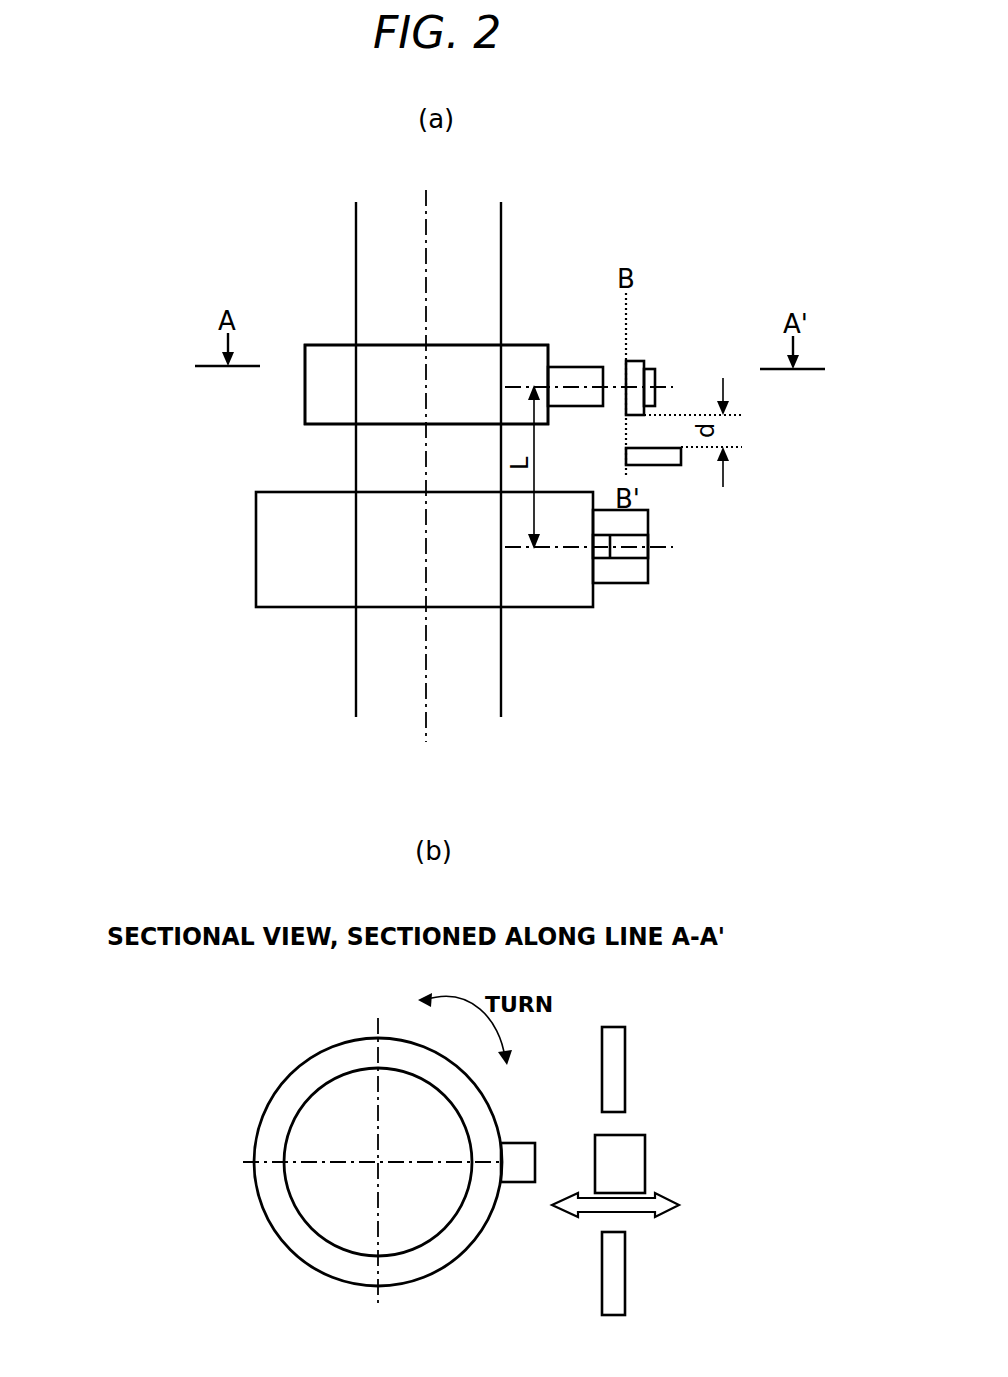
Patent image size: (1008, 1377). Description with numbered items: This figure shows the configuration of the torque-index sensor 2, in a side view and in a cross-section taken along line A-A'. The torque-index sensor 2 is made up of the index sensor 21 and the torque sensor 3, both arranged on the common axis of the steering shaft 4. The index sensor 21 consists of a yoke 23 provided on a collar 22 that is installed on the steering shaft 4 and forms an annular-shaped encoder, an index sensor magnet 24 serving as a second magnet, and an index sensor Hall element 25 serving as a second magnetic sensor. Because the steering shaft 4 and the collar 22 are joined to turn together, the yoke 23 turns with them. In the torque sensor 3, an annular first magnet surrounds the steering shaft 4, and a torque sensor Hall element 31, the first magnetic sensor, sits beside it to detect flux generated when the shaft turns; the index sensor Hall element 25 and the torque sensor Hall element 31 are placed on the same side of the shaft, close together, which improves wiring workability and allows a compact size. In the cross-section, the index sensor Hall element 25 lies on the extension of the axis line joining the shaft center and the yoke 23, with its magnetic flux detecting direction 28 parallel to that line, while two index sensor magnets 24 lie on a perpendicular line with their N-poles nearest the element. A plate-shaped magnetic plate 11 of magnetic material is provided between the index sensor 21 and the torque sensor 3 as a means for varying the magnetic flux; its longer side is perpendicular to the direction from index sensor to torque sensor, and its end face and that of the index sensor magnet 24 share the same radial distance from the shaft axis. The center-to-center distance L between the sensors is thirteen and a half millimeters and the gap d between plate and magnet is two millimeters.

The torque-index sensor 2 is at (175, 238).
The torque sensor 3 is at (255, 565).
The steering shaft 4 is at (505, 237).
The magnetic plate 11 is at (670, 465).
The index sensor 21 is at (323, 343).
The collar 22 is at (528, 345).
The yoke 23 is at (572, 367).
The index sensor magnet 24 is at (639, 362).
The index sensor Hall element 25 is at (653, 370).
The magnetic flux detecting direction 28 is at (643, 1213).
The torque sensor Hall element 31 is at (648, 552).